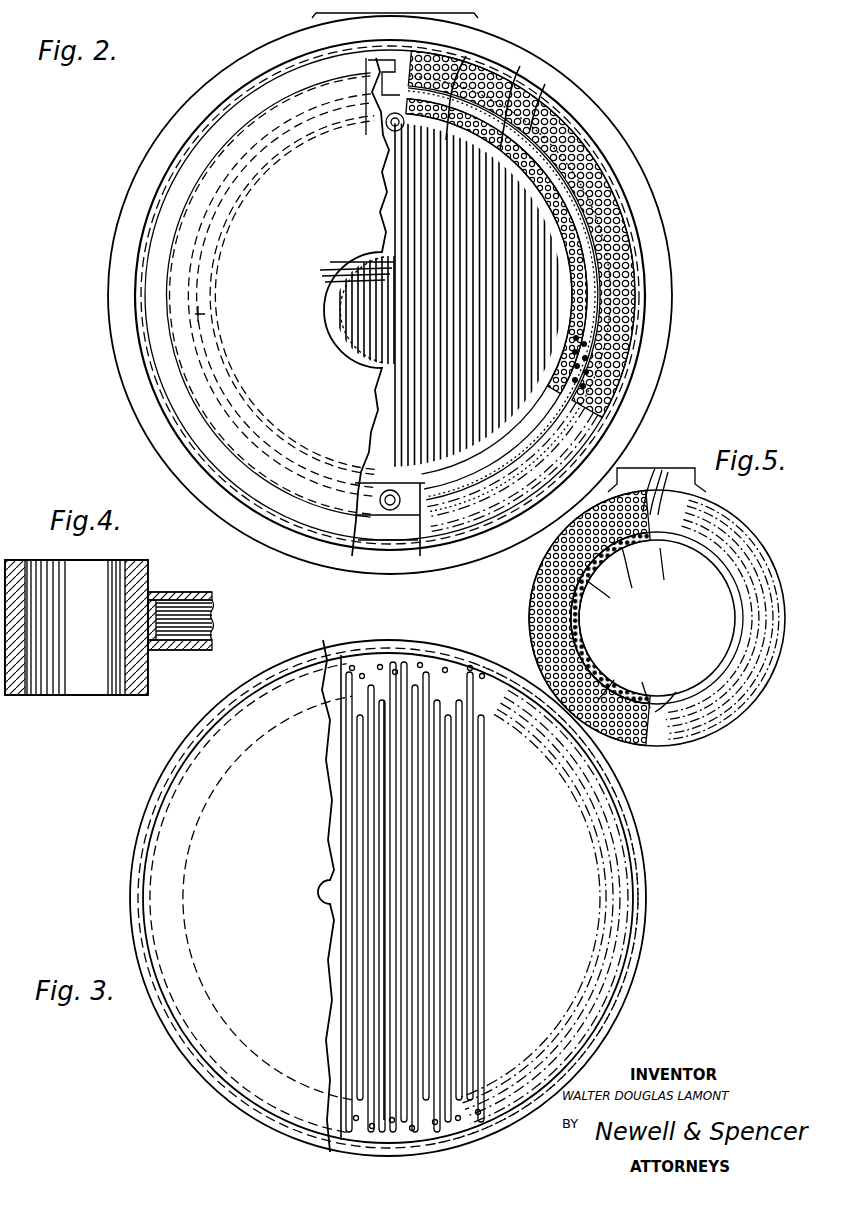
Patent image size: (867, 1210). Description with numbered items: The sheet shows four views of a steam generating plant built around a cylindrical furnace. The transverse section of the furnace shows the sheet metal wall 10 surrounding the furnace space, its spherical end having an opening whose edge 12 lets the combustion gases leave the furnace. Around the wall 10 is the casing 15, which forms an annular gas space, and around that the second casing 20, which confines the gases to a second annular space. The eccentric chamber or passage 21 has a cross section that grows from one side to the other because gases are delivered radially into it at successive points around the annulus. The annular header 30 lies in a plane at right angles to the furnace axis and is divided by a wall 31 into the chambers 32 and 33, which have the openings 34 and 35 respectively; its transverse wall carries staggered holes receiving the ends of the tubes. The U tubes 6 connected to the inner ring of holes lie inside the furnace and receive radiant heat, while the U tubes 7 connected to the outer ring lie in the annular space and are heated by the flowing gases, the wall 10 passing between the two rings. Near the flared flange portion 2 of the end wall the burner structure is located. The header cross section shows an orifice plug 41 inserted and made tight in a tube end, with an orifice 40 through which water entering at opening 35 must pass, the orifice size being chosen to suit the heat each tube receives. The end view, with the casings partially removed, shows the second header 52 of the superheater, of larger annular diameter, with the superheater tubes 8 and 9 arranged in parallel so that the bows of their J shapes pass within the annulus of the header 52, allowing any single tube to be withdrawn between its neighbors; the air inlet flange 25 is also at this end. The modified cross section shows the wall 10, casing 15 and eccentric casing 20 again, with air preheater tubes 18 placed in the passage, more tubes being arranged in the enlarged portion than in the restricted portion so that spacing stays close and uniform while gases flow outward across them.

In FIG. 2, the flared flange portion 2 is at (336, 345).
In FIG. 2, the U tubes 6 is at (312, 278).
In FIG. 5, the U tubes 6 is at (636, 628).
In FIG. 2, the U tubes 7 is at (541, 97).
In FIG. 5, the U tubes 7 is at (602, 640).
In FIG. 2, the superheater tubes 8 is at (458, 88).
In FIG. 3, the superheater tubes 8 is at (372, 735).
In FIG. 5, the superheater tubes 8 is at (500, 627).
In FIG. 3, the superheater tubes 9 is at (383, 968).
In FIG. 5, the superheater tubes 9 is at (500, 607).
In FIG. 5, the sheet metal wall 10 is at (712, 572).
In FIG. 2, the opening edge 12 is at (392, 207).
In FIG. 5, the casing 15 is at (705, 550).
In FIG. 2, the tubes 18 is at (605, 165).
In FIG. 5, the tubes 18 is at (655, 480).
In FIG. 2, the second casing 20 is at (650, 328).
In FIG. 5, the second casing 20 is at (760, 540).
In FIG. 2, the chamber or passage 21 is at (678, 254).
In FIG. 3, the flange 25 is at (330, 892).
In FIG. 2, the header 30 is at (565, 390).
In FIG. 2, the wall 31 is at (215, 320).
In FIG. 2, the chamber 32 is at (605, 190).
In FIG. 2, the chamber 33 is at (420, 550).
In FIG. 4, the chamber 33 is at (149, 572).
In FIG. 2, the opening 34 is at (376, 135).
In FIG. 2, the opening 35 is at (356, 485).
In FIG. 2, the orifice 40 is at (578, 360).
In FIG. 4, the orifice 40 is at (130, 618).
In FIG. 4, the orifice plug 41 is at (130, 630).
In FIG. 3, the second header 52 is at (374, 645).